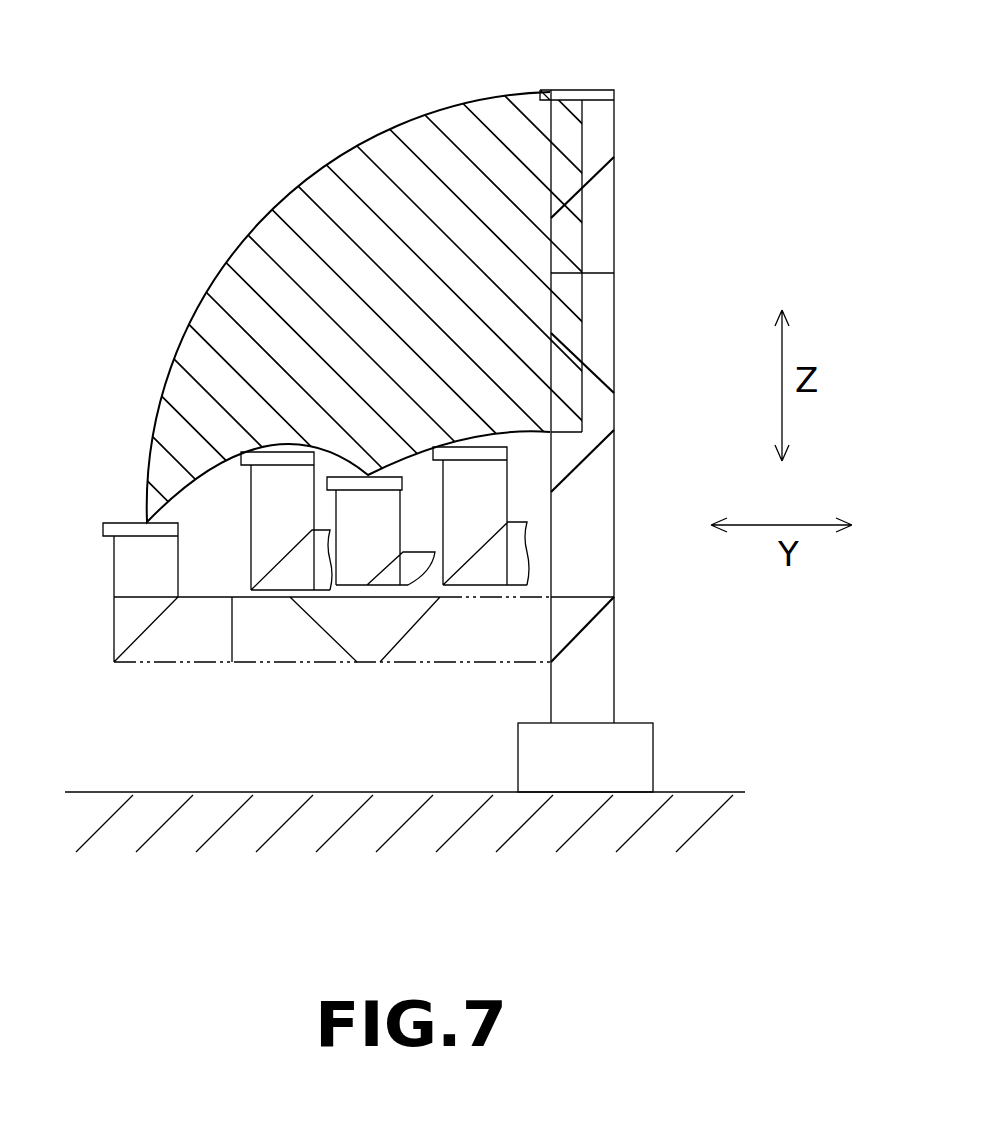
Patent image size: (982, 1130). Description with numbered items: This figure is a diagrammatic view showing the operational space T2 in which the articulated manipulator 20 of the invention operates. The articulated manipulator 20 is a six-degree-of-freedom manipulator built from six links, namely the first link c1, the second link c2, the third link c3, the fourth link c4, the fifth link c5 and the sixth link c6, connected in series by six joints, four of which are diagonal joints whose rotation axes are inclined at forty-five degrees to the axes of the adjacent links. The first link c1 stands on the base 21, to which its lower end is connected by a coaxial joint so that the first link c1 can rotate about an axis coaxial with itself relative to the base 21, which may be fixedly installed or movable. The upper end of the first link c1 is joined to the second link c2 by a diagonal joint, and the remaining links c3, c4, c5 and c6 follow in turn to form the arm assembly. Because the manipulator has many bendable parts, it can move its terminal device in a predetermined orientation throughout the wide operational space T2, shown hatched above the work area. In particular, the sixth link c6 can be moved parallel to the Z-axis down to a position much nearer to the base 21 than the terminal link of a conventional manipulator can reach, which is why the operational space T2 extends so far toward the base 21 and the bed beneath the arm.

The operational space T2 is at (380, 157).
The articulated manipulator 20 is at (774, 191).
The base 21 is at (647, 757).
The first link c1 is at (607, 660).
The second link c2 is at (607, 493).
The third link c3 is at (607, 415).
The fourth link c4 is at (607, 336).
The fifth link c5 is at (607, 210).
The sixth link c6 is at (607, 128).